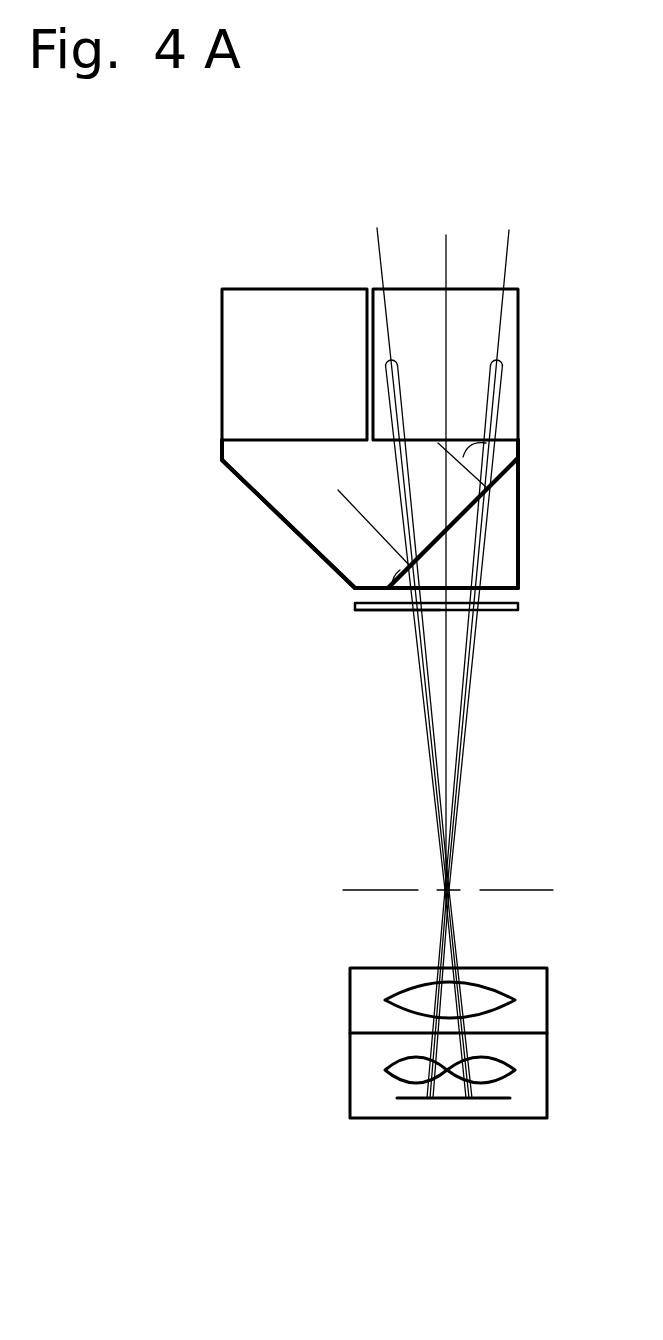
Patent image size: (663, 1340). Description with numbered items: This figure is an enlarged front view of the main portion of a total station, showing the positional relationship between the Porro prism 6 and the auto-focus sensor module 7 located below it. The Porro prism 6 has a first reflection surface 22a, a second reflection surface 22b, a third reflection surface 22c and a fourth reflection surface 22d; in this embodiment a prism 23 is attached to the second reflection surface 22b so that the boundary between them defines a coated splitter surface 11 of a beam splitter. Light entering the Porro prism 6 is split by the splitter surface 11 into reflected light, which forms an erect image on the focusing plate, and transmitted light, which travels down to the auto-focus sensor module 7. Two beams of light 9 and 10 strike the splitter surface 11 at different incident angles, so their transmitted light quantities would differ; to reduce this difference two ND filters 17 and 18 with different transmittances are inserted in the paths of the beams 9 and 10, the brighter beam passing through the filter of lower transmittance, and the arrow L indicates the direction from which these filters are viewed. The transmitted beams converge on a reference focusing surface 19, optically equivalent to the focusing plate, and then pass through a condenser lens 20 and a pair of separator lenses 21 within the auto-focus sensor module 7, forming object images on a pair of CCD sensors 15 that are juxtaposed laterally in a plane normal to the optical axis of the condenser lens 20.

The Porro prism 6 is at (265, 470).
The auto-focus sensor module 7 is at (547, 1075).
The beam of light 9 is at (498, 375).
The beam of light 10 is at (393, 362).
The coated splitter surface 11 is at (510, 470).
The CCD sensors 15 is at (497, 1100).
The ND filter 17 is at (505, 612).
The ND filter 18 is at (377, 612).
The reference focusing surface 19 is at (510, 890).
The condenser lens 20 is at (477, 997).
The separator lenses 21 is at (402, 1077).
The first reflection surface 22a is at (468, 328).
The second reflection surface 22b is at (353, 597).
The third reflection surface 22c is at (240, 475).
The fourth reflection surface 22d is at (290, 363).
The prism 23 is at (505, 512).
The arrow L is at (662, 600).